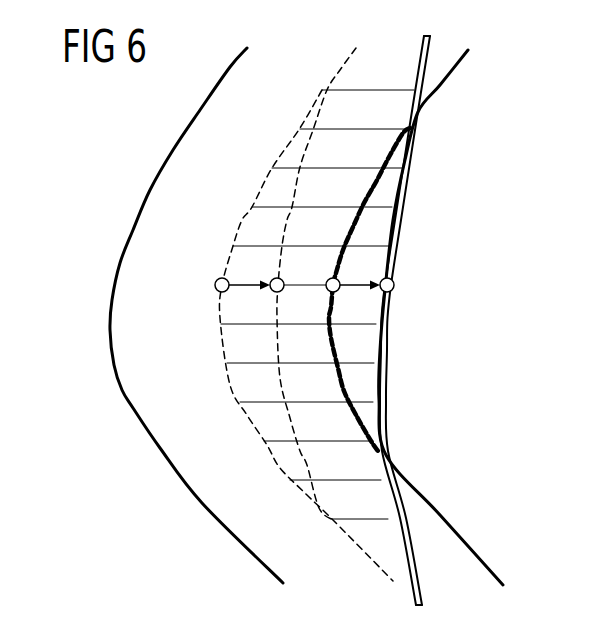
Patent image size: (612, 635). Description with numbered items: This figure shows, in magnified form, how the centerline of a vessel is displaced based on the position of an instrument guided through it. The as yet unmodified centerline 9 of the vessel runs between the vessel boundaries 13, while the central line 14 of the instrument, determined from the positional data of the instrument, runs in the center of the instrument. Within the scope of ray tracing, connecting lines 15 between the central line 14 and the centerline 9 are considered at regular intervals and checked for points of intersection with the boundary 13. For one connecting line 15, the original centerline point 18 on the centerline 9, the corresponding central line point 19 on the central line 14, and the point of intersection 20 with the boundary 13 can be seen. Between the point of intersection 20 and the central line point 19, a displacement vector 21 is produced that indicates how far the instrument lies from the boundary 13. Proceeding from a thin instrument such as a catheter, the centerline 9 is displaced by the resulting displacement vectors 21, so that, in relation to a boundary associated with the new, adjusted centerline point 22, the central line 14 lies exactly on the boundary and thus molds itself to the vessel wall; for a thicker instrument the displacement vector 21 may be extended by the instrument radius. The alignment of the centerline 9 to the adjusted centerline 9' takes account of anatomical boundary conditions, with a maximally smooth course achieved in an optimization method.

The centerline 9 is at (257, 335).
The adjusted centerline 9' is at (225, 284).
The boundary 13 is at (201, 503).
The central line 14 is at (408, 180).
The connecting line 15 is at (361, 361).
The original centerline point 18 is at (214, 285).
The central line point 19 is at (395, 285).
The point of intersection 20 is at (334, 293).
The displacement vector 21 is at (245, 285).
The adjusted centerline point 22 is at (271, 293).